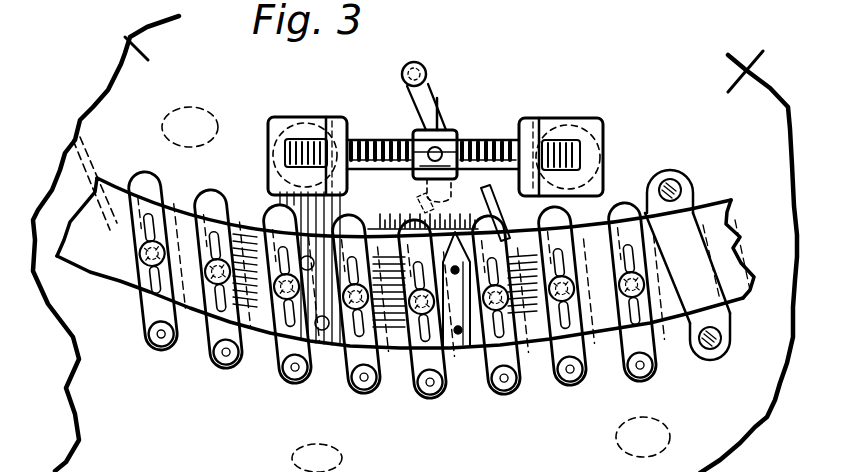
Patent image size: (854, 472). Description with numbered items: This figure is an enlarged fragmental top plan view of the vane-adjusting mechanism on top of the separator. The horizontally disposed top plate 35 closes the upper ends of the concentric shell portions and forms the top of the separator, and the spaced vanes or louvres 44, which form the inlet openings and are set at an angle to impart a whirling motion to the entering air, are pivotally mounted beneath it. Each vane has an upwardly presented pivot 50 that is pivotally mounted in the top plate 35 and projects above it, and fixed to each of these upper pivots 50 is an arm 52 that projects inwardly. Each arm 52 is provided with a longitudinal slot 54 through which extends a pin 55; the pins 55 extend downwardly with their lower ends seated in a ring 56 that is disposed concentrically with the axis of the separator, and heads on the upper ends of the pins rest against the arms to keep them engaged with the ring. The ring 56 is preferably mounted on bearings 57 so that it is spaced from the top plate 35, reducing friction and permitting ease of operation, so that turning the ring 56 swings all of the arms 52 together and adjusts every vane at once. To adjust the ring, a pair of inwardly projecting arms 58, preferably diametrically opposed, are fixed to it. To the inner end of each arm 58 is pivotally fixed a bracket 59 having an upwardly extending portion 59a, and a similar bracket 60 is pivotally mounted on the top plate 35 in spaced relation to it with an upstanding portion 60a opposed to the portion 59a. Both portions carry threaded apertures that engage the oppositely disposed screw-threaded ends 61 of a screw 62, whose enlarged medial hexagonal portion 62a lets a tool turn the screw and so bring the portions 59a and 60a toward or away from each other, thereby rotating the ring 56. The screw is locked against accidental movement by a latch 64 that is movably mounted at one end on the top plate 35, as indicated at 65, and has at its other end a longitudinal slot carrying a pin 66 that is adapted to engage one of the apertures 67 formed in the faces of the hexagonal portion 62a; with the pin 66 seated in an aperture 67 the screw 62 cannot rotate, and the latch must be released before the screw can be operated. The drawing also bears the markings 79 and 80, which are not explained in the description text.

The top plate 35 is at (415, 244).
The vanes or louvres 44 is at (78, 152).
The upper pivots 50 is at (228, 365).
The arm 52 is at (150, 308).
The longitudinal slot 54 is at (138, 290).
The pin 55 is at (134, 250).
The ring 56 is at (263, 333).
The bearings 57 is at (686, 186).
The inwardly projecting arms 58 is at (270, 192).
The bracket 59 is at (268, 121).
The upwardly extending portion 59a is at (328, 117).
The bracket 60 is at (595, 127).
The upstanding portion 60a is at (530, 122).
The screw-threaded ends 61 is at (364, 140).
The screw 62 is at (462, 132).
The hexagonal portion 62a is at (415, 135).
The latch 64 is at (437, 83).
The latch mounting 65 is at (408, 62).
The pin 66 is at (456, 140).
The apertures 67 is at (445, 135).
The scale graduations 79 is at (385, 219).
The pointer plate 80 is at (466, 246).